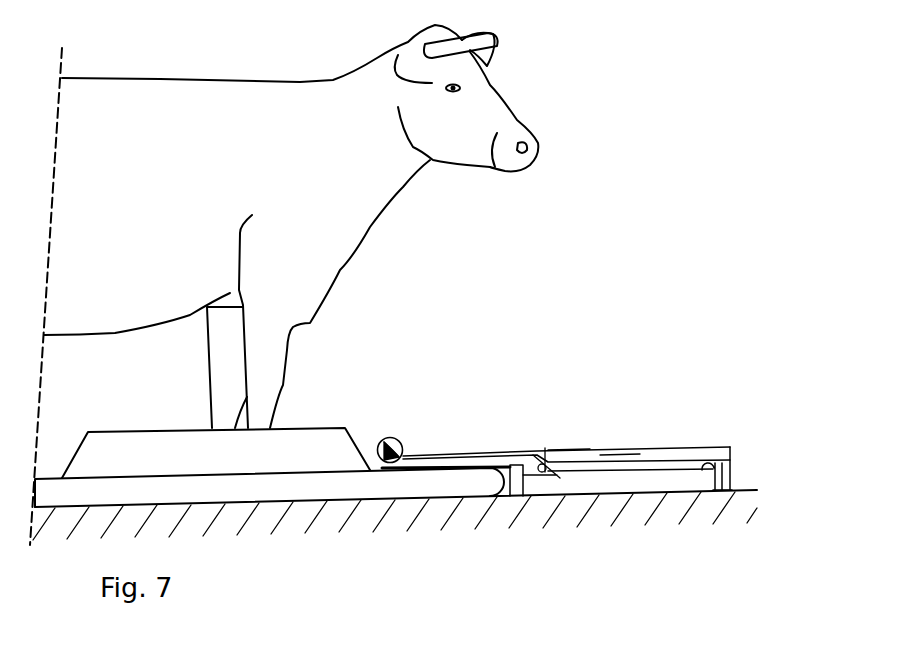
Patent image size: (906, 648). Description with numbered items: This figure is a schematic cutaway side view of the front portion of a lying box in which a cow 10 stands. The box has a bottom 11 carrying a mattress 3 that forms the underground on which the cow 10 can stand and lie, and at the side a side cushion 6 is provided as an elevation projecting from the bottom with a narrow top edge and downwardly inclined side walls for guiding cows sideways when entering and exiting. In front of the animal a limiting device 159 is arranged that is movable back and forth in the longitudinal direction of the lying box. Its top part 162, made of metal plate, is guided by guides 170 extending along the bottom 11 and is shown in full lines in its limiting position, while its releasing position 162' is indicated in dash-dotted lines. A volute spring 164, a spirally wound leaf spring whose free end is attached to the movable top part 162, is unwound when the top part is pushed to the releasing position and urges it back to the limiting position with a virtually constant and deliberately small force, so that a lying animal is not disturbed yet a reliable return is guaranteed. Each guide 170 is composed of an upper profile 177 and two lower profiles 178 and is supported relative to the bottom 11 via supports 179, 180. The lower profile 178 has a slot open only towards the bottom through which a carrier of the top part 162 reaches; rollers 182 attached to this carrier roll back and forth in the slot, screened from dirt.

The cow 10 is at (158, 78).
The side cushion 6 is at (128, 450).
The mattress 3 is at (308, 487).
The bottom 11 is at (745, 487).
The volute spring 164 is at (393, 436).
The limiting device 159 is at (477, 446).
The top part 162 is at (556, 396).
The guide 170 is at (568, 448).
The releasing position 162' is at (629, 401).
The upper profile 177 is at (693, 452).
The lower profile 178 is at (628, 470).
The support 180 is at (717, 482).
The support 179 is at (517, 488).
The roller 182 is at (541, 473).